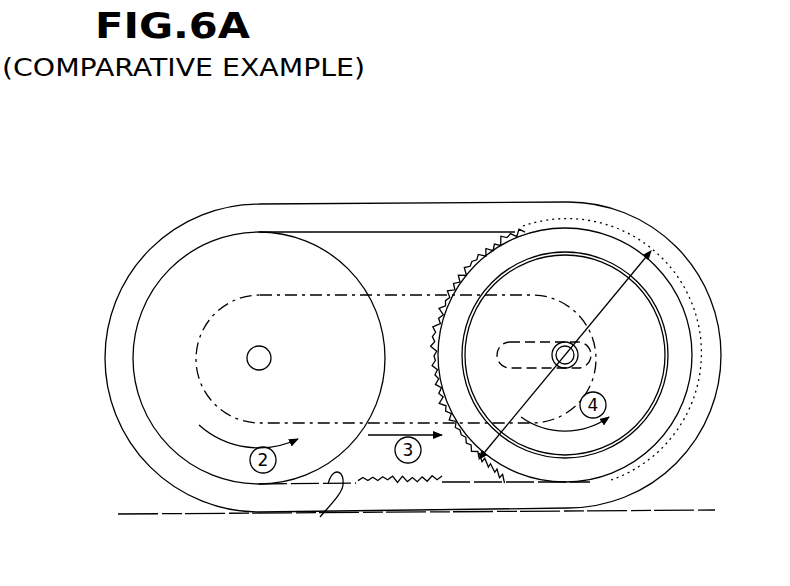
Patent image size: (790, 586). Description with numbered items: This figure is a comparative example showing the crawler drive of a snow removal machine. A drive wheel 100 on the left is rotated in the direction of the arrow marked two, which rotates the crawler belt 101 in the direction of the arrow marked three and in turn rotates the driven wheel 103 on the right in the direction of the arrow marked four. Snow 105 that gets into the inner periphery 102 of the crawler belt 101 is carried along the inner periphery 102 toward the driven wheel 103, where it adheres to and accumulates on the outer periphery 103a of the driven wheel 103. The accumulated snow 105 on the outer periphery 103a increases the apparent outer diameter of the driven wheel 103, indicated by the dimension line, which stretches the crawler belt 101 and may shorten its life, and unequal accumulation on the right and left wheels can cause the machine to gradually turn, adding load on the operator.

The drive wheel 100 is at (233, 252).
The crawler belt 101 is at (150, 445).
The inner periphery 102 is at (307, 513).
The driven wheel 103 is at (610, 247).
The outer periphery 103a is at (480, 248).
The snow 105 is at (441, 262).